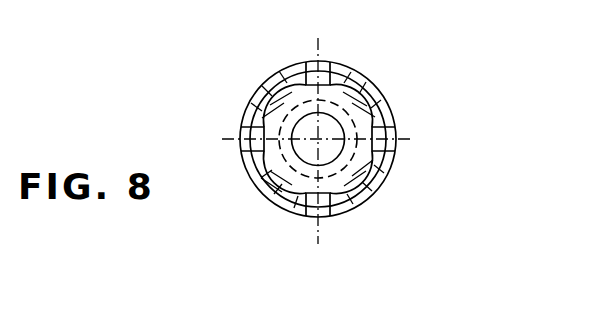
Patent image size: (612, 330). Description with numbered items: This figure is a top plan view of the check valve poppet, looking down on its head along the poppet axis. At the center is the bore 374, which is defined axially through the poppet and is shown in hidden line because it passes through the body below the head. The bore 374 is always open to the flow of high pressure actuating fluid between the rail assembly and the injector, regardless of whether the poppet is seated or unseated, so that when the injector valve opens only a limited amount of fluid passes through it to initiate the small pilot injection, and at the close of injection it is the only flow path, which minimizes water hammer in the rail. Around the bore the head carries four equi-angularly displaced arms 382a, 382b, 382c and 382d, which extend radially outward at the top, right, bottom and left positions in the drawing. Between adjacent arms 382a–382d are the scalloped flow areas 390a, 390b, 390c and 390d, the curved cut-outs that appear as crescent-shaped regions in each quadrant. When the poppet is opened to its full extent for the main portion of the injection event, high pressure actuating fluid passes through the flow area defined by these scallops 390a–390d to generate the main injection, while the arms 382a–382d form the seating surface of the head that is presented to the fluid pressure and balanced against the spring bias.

The bore 374 is at (322, 110).
The arm 382a is at (328, 217).
The arm 382b is at (387, 152).
The arm 382c is at (305, 65).
The arm 382d is at (243, 133).
The scalloped flow area 390a is at (358, 192).
The scalloped flow area 390b is at (372, 103).
The scalloped flow area 390c is at (253, 105).
The scalloped flow area 390d is at (264, 188).